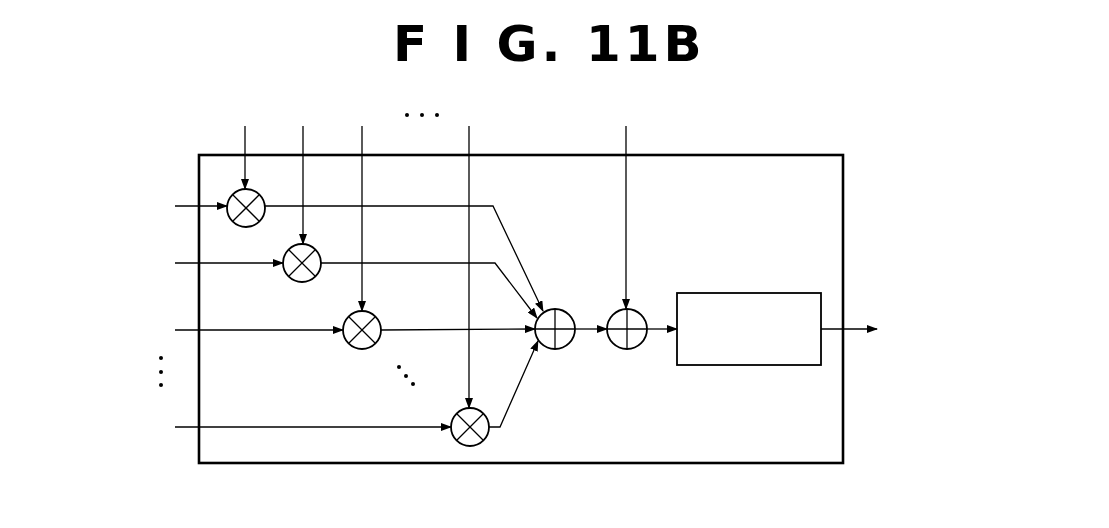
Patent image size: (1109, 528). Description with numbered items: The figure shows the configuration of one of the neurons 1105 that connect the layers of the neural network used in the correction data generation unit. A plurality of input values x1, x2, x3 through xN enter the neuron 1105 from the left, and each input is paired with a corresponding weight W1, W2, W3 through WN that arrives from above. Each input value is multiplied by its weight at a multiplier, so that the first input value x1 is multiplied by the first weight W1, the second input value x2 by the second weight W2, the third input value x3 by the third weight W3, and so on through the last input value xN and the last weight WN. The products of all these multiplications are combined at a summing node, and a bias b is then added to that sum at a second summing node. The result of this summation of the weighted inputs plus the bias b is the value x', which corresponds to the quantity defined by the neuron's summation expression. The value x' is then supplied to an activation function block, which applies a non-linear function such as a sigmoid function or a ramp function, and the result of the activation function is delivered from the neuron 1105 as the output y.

The neuron 1105 is at (772, 155).
The weight W1 is at (242, 146).
The weight W2 is at (300, 174).
The weight W3 is at (359, 207).
The weight WN is at (467, 256).
The bias b is at (625, 206).
The input value x1 is at (186, 207).
The input value x2 is at (214, 264).
The input value x3 is at (244, 331).
The input value xN is at (298, 428).
The weighted sum x' is at (662, 315).
The output y is at (857, 330).